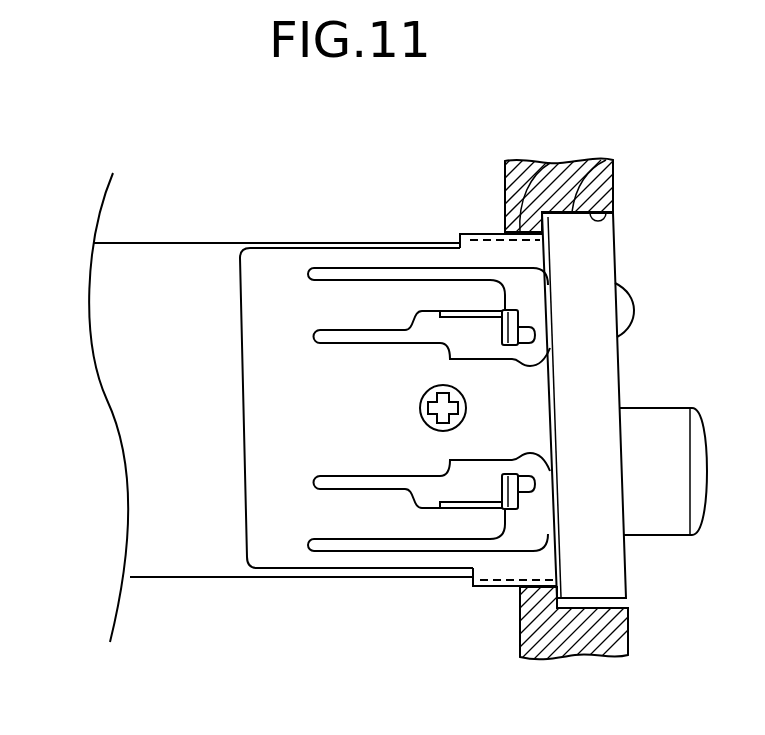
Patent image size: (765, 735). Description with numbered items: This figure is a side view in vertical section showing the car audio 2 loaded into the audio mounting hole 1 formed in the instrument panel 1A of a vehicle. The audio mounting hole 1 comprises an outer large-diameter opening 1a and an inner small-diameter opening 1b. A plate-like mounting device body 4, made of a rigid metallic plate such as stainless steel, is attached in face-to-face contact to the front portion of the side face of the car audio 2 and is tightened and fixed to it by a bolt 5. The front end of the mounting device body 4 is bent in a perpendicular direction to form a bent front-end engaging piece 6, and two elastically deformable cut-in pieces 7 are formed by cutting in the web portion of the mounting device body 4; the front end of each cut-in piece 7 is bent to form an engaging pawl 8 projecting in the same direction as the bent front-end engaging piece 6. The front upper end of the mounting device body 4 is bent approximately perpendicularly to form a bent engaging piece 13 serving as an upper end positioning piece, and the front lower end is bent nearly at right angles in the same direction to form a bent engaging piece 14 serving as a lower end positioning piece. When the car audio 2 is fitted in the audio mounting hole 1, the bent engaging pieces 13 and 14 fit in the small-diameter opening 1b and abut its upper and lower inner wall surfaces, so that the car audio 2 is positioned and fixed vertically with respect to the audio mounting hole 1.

The audio mounting hole 1 is at (617, 223).
The instrument panel 1A is at (607, 180).
The outer large-diameter opening 1a is at (603, 157).
The inner small-diameter opening 1b is at (537, 167).
The car audio 2 is at (172, 283).
The mounting device body 4 is at (277, 283).
The bolt 5 is at (420, 408).
The bent front-end engaging piece 6 is at (563, 363).
The cut-in piece 7 is at (362, 303).
The engaging pawl 8 is at (513, 317).
The bent engaging piece 13 is at (482, 230).
The bent engaging piece 14 is at (497, 592).